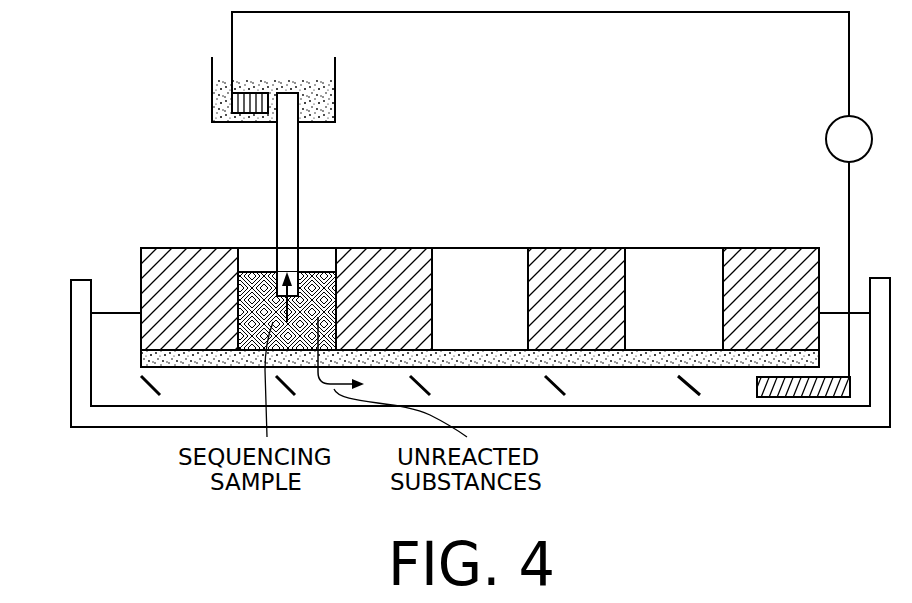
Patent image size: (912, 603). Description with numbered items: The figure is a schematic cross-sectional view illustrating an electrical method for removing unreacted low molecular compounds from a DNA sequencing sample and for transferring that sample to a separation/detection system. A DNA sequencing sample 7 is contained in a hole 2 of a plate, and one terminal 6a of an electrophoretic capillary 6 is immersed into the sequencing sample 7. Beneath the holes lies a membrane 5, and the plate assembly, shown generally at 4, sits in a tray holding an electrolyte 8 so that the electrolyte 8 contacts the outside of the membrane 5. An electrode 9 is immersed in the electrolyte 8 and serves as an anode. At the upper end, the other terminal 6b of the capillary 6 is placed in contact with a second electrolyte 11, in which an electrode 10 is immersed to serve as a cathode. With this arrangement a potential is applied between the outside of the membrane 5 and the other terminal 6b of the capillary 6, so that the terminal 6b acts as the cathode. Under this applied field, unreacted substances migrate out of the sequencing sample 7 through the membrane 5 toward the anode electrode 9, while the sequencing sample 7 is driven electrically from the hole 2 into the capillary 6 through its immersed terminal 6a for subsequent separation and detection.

The hole 2 is at (252, 258).
The gel 4 is at (800, 229).
The membrane 5 is at (626, 370).
The electrophoretic capillary 6 is at (298, 177).
The terminal of the capillary 6a is at (311, 297).
The other terminal of the capillary 6b is at (289, 104).
The DNA sequencing sample 7 is at (238, 297).
The electrolyte 8 is at (124, 380).
The electrode 9 is at (787, 397).
The electrode 10 is at (250, 115).
The electrolyte 11 is at (328, 91).